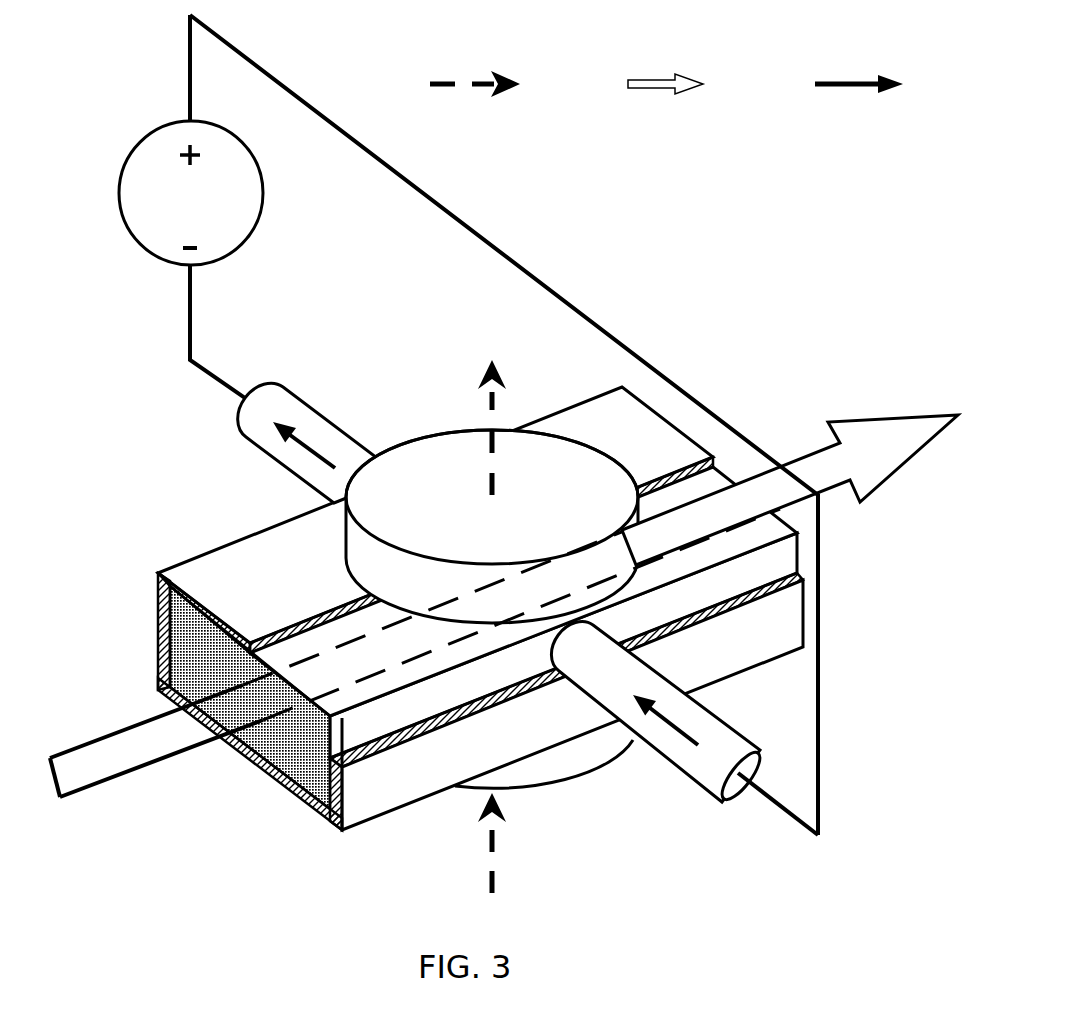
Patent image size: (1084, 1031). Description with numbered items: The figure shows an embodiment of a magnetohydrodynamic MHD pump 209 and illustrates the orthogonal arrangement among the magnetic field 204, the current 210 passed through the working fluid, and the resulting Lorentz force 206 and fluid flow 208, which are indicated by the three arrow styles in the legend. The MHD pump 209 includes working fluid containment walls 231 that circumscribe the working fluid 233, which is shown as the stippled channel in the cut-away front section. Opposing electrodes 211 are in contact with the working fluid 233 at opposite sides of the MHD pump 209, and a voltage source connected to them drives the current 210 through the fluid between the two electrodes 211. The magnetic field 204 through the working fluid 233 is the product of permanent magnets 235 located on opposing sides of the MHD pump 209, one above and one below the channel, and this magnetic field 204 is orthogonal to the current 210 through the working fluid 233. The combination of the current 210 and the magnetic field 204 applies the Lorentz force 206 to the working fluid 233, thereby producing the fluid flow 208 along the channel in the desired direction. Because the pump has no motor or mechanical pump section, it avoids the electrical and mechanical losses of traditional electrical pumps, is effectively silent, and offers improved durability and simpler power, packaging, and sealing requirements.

The magnetic field 204 is at (475, 98).
The Lorentz force 206 is at (670, 100).
The fluid flow 208 is at (790, 333).
The current 210 is at (859, 100).
The MHD pump 209 is at (168, 474).
The opposing electrodes 211 is at (319, 443).
The working fluid containment walls 231 is at (208, 575).
The working fluid 233 is at (307, 757).
The permanent magnets 235 is at (458, 440).